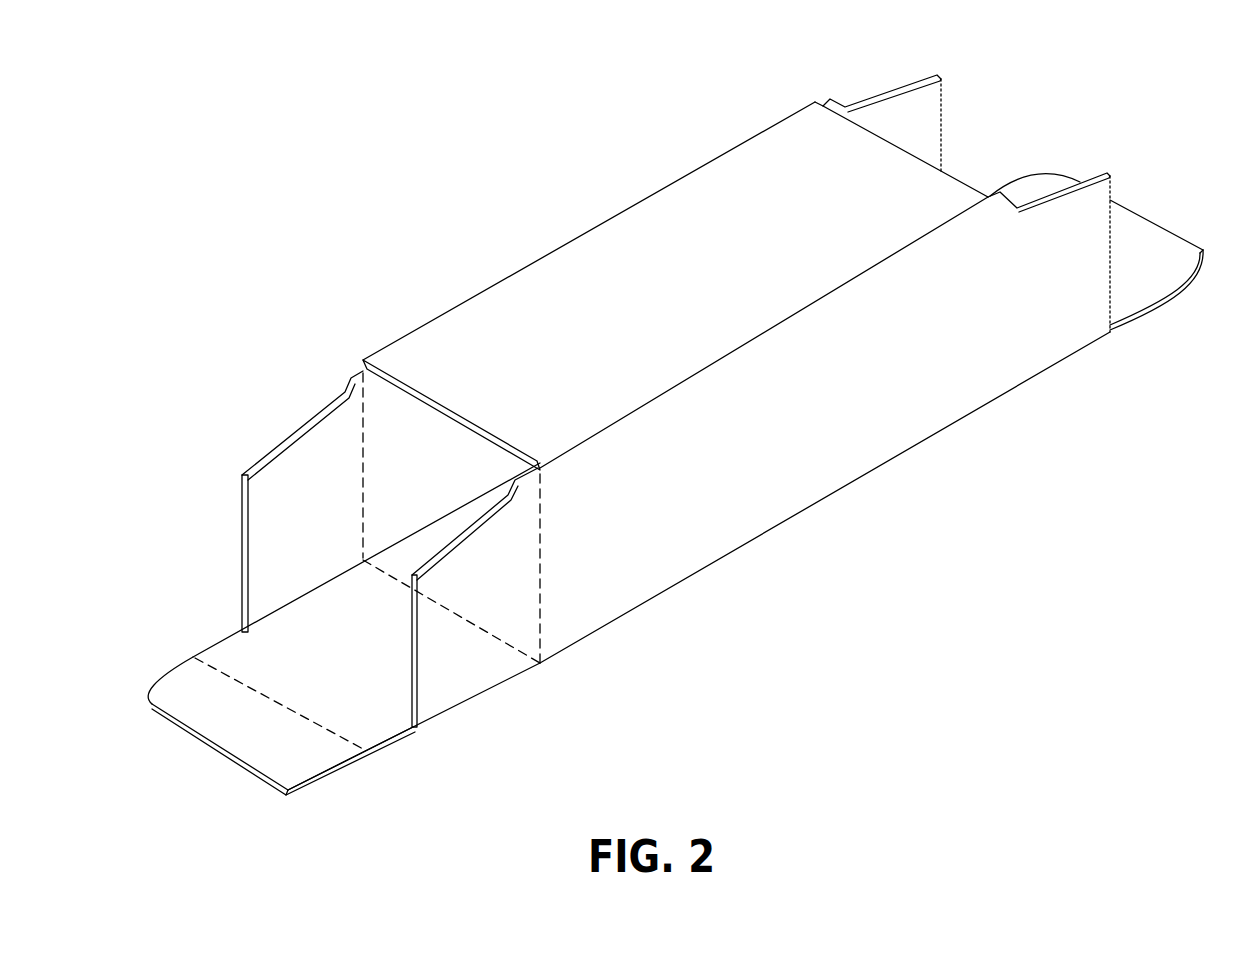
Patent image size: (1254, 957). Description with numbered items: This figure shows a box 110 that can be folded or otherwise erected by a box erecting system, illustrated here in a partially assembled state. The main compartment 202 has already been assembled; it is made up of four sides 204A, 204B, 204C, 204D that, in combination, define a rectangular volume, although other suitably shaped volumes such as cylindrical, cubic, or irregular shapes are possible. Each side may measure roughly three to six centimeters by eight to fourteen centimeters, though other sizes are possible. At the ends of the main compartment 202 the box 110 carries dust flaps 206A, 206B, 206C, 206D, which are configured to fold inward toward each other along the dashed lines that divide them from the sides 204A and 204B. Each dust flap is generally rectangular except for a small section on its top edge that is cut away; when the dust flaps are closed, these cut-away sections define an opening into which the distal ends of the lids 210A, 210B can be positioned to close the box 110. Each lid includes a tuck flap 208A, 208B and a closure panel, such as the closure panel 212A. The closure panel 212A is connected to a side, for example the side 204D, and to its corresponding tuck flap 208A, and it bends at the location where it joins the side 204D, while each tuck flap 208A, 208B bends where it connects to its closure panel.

The box 110 is at (1098, 72).
The main compartment 202 is at (692, 547).
The side 204A is at (764, 430).
The side 204B is at (407, 465).
The side 204C is at (675, 286).
The side 204D is at (633, 608).
The dust flap 206A is at (466, 663).
The dust flap 206B is at (366, 514).
The dust flap 206C is at (1055, 309).
The dust flap 206D is at (930, 126).
The tuck flap 208A is at (305, 756).
The tuck flap 208B is at (1178, 262).
The lid 210A is at (185, 685).
The lid 210B is at (1132, 228).
The closure panel 212A is at (283, 692).